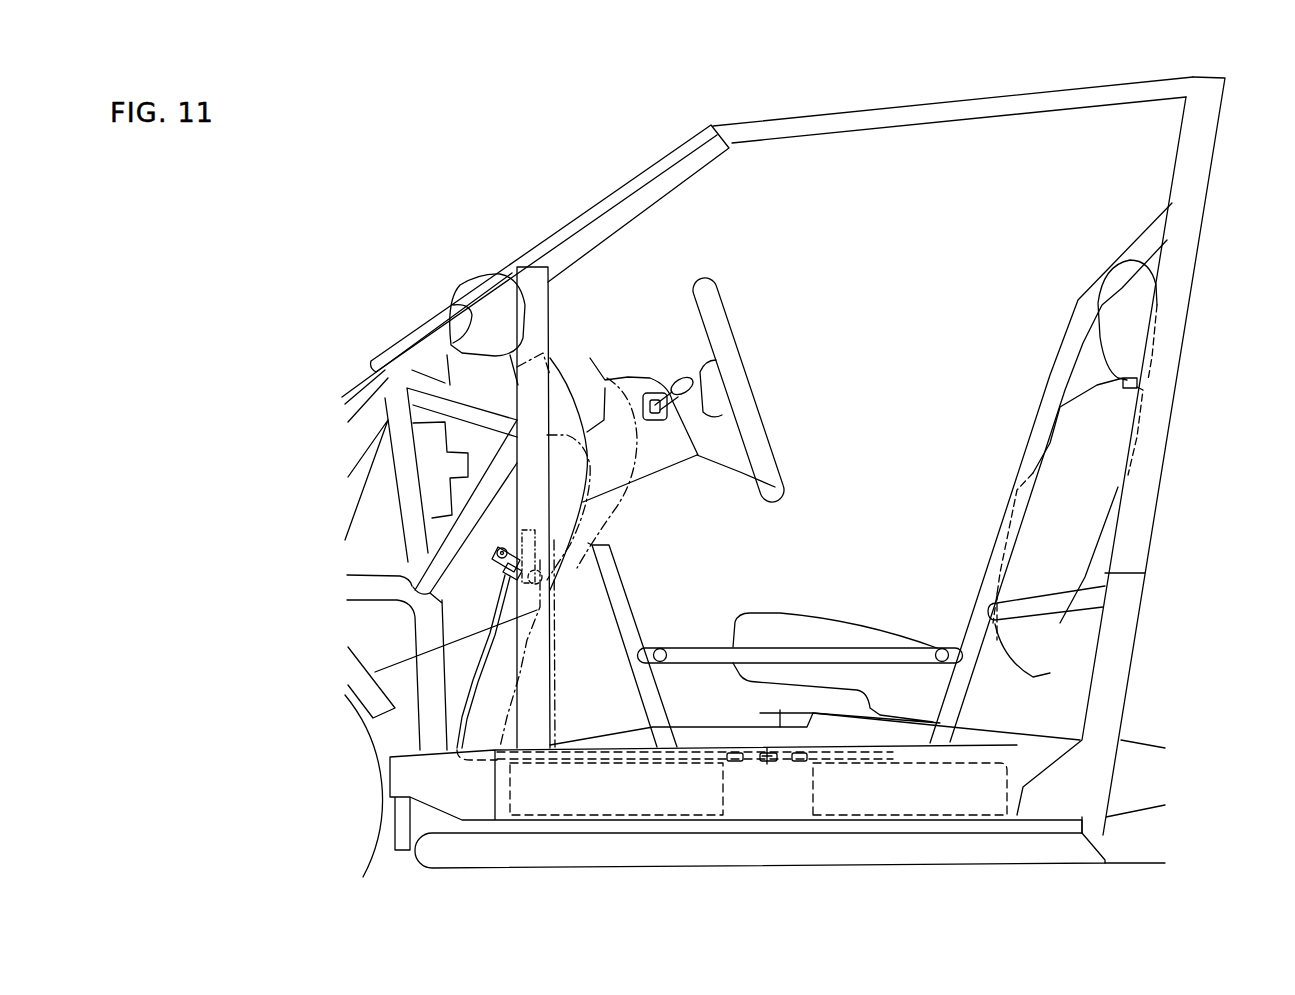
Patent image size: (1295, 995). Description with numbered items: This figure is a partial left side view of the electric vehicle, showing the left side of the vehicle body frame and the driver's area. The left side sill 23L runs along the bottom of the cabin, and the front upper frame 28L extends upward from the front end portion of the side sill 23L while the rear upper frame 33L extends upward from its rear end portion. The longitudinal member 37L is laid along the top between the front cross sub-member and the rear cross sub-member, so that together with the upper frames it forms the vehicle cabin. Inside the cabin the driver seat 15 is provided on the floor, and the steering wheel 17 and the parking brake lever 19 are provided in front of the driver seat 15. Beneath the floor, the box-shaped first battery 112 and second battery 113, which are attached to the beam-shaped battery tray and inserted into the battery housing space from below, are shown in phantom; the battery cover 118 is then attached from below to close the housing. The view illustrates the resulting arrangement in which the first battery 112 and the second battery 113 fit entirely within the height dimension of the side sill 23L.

The longitudinal member 37L is at (922, 119).
The rear upper frame 33L is at (1153, 457).
The front upper frame 28L is at (540, 311).
The parking brake lever 19 is at (563, 367).
The steering wheel 17 is at (740, 387).
The driver seat 15 is at (850, 633).
The battery cover 118 is at (575, 855).
The first battery 112 is at (649, 805).
The second battery 113 is at (906, 800).
The side sill 23L is at (772, 805).